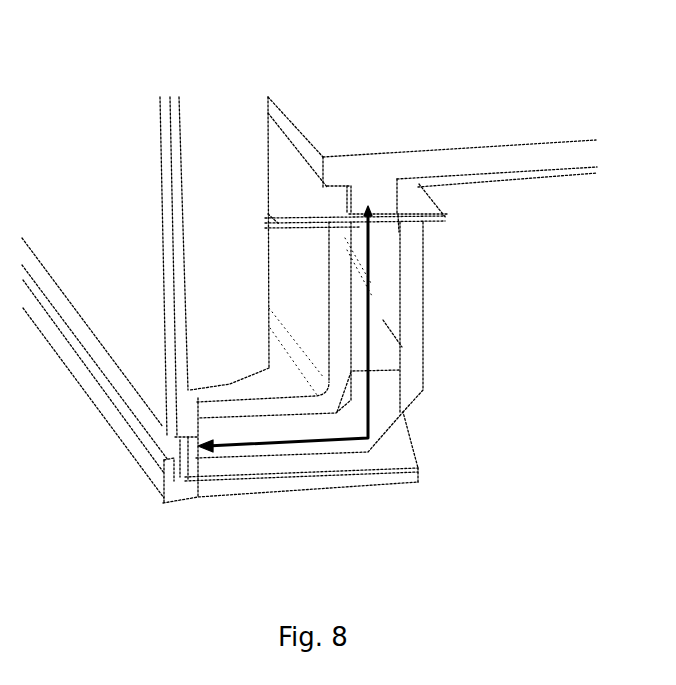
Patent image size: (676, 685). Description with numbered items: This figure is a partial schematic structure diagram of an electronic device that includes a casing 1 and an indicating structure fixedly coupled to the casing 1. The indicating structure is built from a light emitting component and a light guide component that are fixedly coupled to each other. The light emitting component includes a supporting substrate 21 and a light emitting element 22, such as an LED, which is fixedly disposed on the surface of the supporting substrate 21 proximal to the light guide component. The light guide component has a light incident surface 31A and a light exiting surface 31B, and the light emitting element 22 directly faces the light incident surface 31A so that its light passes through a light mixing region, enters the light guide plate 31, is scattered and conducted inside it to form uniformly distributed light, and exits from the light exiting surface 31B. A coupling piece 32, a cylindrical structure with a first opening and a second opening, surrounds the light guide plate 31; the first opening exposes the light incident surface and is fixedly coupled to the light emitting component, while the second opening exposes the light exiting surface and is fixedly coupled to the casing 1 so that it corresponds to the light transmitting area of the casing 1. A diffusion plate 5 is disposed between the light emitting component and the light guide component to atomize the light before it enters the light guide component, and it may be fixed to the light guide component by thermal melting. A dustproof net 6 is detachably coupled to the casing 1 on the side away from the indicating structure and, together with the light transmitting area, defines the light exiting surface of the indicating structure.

The casing 1 is at (200, 125).
The supporting substrate 21 is at (488, 167).
The light emitting element 22 is at (363, 200).
The diffusion plate 5 is at (413, 220).
The dustproof net 6 is at (148, 387).
The light guide plate 31 is at (380, 415).
The light incident surface 31A is at (380, 357).
The light exiting surface 31B is at (216, 447).
The coupling piece 32 is at (413, 258).